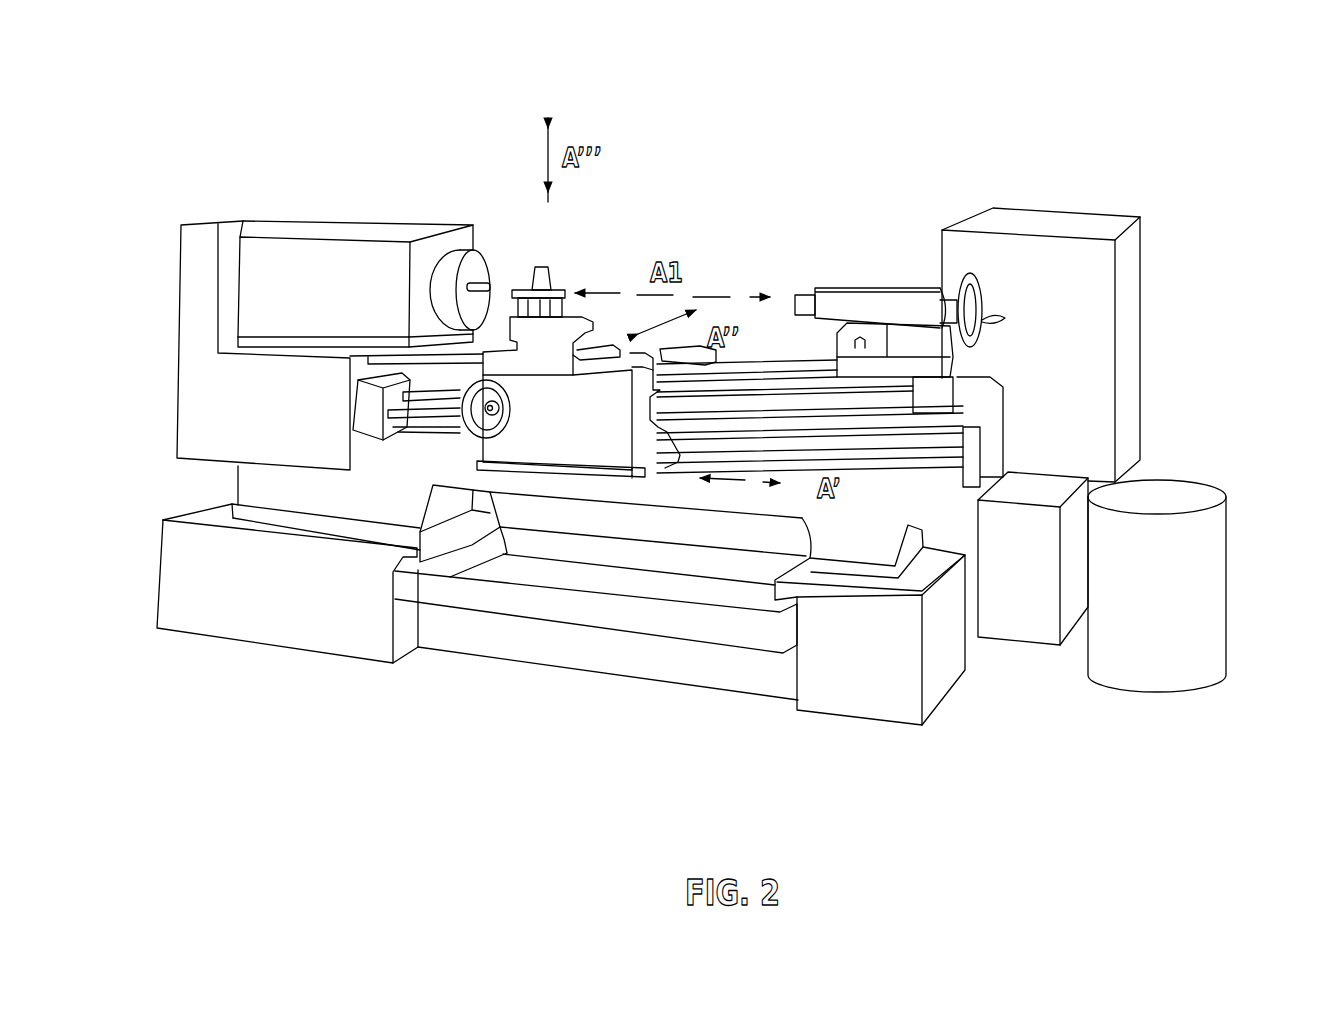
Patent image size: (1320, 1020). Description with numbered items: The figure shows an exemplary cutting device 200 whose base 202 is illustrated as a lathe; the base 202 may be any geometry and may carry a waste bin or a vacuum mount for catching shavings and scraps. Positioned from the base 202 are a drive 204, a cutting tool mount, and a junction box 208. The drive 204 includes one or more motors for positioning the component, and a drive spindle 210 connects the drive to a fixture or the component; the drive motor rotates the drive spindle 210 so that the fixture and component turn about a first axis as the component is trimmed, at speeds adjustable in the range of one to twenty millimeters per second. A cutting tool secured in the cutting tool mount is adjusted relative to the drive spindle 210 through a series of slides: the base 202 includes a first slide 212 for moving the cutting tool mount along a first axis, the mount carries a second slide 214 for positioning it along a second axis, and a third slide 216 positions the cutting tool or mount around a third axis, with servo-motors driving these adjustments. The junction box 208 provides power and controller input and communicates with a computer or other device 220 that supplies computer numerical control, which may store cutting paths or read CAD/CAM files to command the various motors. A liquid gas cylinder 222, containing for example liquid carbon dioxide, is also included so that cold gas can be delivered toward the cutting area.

The cutting device 200 is at (337, 88).
The base 202 is at (568, 622).
The drive 204 is at (217, 387).
The junction box 208 is at (1013, 620).
The drive spindle 210 is at (472, 227).
The first slide 212 is at (568, 428).
The second slide 214 is at (607, 347).
The third slide 216 is at (536, 290).
The computer or other device 220 is at (1070, 228).
The liquid gas cylinder 222 is at (1150, 677).